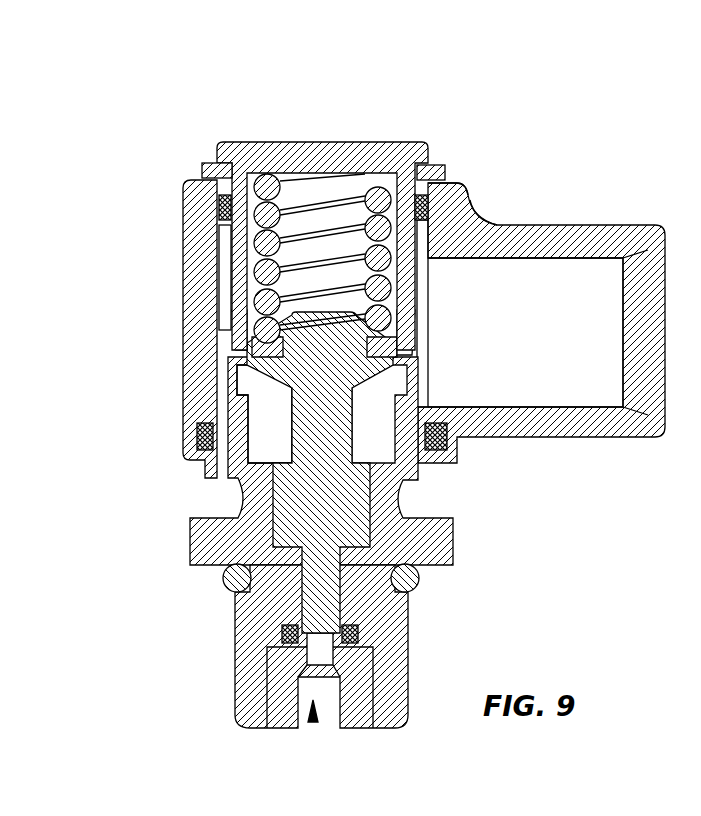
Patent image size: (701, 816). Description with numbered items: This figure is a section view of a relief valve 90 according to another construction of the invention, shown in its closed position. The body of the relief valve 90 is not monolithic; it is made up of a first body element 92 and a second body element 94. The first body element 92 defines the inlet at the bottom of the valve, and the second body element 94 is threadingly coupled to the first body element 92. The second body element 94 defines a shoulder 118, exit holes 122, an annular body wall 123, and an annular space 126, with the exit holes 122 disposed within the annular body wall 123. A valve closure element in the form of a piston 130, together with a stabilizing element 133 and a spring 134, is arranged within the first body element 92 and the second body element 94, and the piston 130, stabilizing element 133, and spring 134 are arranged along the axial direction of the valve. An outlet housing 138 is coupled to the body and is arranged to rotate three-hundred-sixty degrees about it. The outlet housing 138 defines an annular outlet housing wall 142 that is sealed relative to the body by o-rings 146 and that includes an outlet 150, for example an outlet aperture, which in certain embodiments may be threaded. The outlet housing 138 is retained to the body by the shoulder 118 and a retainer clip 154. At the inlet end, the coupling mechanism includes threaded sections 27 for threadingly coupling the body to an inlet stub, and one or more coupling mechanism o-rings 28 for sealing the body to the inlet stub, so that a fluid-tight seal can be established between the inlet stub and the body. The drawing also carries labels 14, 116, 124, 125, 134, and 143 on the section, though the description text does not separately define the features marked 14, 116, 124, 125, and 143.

The inlet flow 14 is at (310, 722).
The coupling mechanism threaded sections 27 is at (243, 666).
The coupling mechanism o-rings 28 is at (227, 585).
The relief valve 90 is at (592, 148).
The first body element 92 is at (365, 603).
The second body element 94 is at (346, 150).
The seal 116 is at (450, 440).
The shoulder 118 is at (398, 466).
The exit holes 122 is at (240, 350).
The annular body wall 123 is at (500, 235).
The upper boss 124 is at (462, 212).
The thin wall 125 is at (420, 285).
The annular space 126 is at (226, 290).
The piston 130 is at (345, 498).
The stabilizing element 133 is at (240, 395).
The spring 134 is at (416, 332).
The outlet housing 138 is at (548, 232).
The annular outlet housing wall 142 is at (221, 205).
The sleeve 143 is at (215, 258).
The o-rings 146 is at (198, 438).
The outlet 150 is at (515, 406).
The retainer clip 154 is at (440, 172).